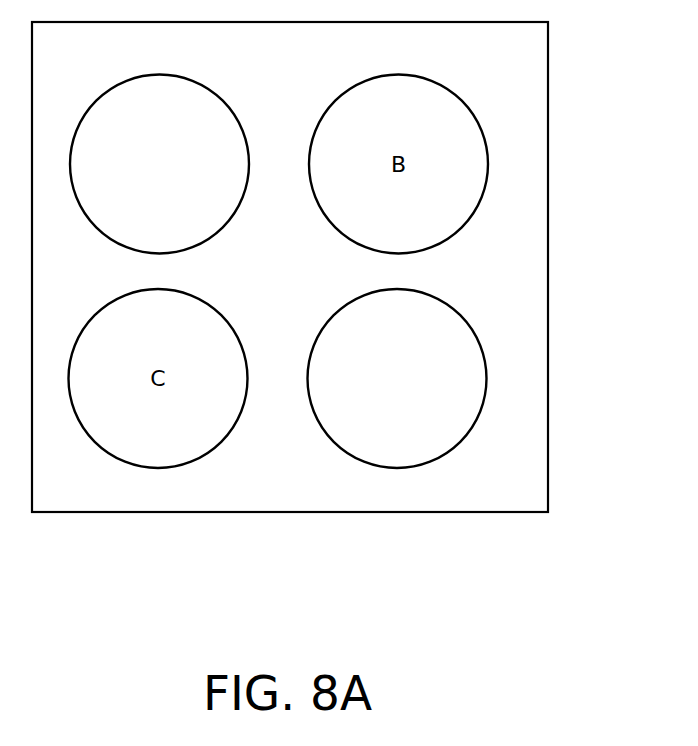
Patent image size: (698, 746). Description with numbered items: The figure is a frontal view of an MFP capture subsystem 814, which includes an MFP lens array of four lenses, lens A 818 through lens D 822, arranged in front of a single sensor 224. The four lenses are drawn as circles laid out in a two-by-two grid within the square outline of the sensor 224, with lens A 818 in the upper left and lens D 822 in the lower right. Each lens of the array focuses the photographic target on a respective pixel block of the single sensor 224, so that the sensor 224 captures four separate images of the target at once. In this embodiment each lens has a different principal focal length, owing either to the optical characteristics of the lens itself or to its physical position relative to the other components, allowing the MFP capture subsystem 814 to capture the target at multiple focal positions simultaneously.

The sensor 224 is at (118, 503).
The lens A 818 is at (245, 128).
The lens D 822 is at (440, 320).
The MFP capture subsystem 814 is at (632, 616).